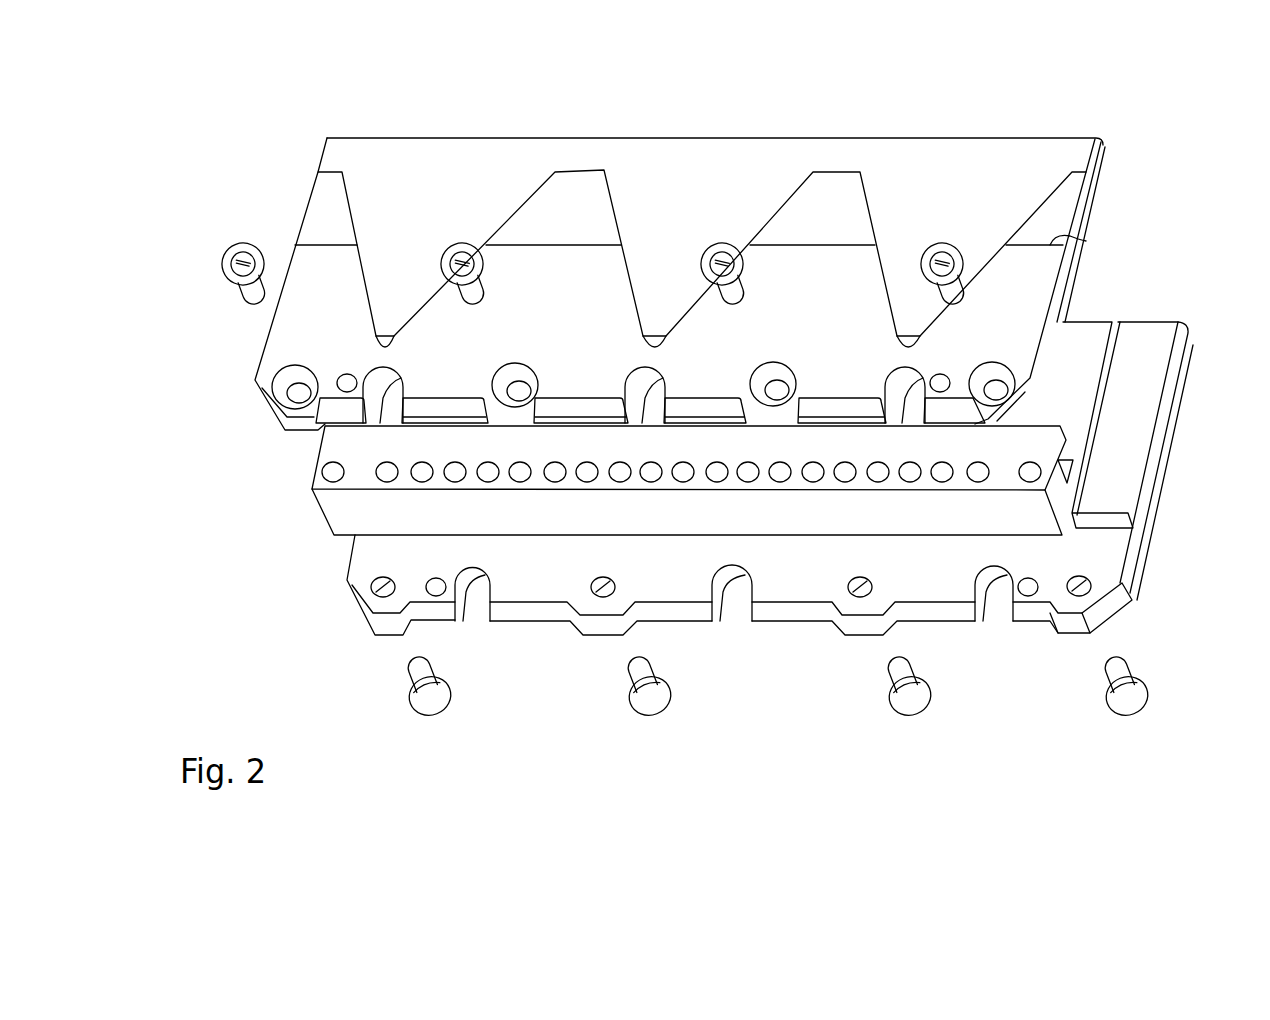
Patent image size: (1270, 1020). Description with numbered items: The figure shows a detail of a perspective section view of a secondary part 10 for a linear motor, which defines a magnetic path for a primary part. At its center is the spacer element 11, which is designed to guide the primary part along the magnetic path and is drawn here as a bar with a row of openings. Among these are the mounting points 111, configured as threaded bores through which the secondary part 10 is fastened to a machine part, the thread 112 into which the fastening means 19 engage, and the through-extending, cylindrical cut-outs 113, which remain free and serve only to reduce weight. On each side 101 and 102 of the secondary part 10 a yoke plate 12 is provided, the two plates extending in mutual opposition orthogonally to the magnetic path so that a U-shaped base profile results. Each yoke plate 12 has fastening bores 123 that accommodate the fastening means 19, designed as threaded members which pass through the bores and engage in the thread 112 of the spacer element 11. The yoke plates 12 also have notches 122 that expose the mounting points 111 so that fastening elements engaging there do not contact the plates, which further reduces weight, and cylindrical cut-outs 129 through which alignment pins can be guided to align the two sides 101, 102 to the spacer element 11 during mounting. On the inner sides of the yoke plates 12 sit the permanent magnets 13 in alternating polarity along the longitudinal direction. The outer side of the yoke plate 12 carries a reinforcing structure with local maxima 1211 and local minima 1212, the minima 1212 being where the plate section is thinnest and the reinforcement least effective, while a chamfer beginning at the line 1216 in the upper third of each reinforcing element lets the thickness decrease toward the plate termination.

The secondary part 10 is at (1214, 130).
The side of the secondary part 101 is at (313, 602).
The side of the secondary part 102 is at (233, 338).
The spacer element 11 is at (691, 526).
The mounting points 111 is at (423, 462).
The thread 112 is at (336, 462).
The through-extending cut-outs 113 is at (388, 462).
The yoke plate 12 is at (996, 150).
The local maxima 1211 is at (331, 168).
The local minima 1212 is at (390, 340).
The line 1216 is at (340, 246).
The notches 122 is at (405, 378).
The fastening bores 123 is at (295, 362).
The cut-outs 129 is at (348, 372).
The permanent magnets 13 is at (1104, 158).
The fastening means 19 is at (244, 243).